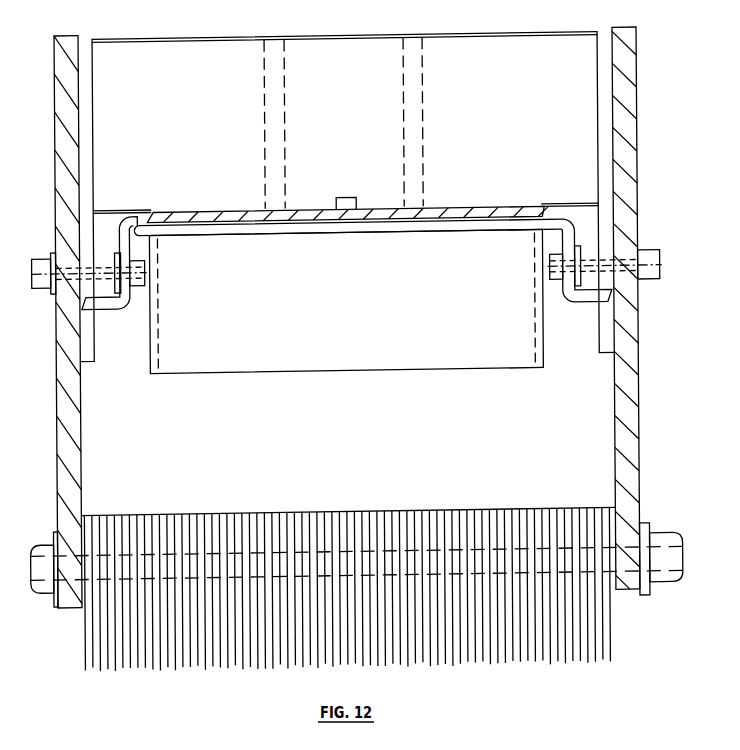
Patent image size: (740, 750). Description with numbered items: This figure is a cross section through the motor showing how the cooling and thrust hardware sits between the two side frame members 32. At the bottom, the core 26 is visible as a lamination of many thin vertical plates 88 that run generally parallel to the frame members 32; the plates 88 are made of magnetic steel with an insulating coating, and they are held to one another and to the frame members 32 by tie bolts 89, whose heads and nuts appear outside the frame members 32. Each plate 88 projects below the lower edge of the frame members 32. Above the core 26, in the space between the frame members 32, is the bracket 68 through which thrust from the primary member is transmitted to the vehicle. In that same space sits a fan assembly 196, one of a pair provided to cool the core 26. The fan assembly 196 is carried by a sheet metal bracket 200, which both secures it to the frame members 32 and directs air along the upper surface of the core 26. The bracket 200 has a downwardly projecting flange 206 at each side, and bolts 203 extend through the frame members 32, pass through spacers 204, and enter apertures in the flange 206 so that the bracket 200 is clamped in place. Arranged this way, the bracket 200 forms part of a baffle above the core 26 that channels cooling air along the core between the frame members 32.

The bracket 68 is at (329, 52).
The frame members 32 is at (613, 75).
The fan assembly 196 is at (192, 206).
The sheet metal bracket 200 is at (126, 311).
The downwardly projecting flange 206 is at (127, 214).
The bolts 203 is at (41, 262).
The spacers 204 is at (105, 263).
The core 26 is at (300, 511).
The plates 88 is at (398, 511).
The tie bolts 89 is at (46, 591).